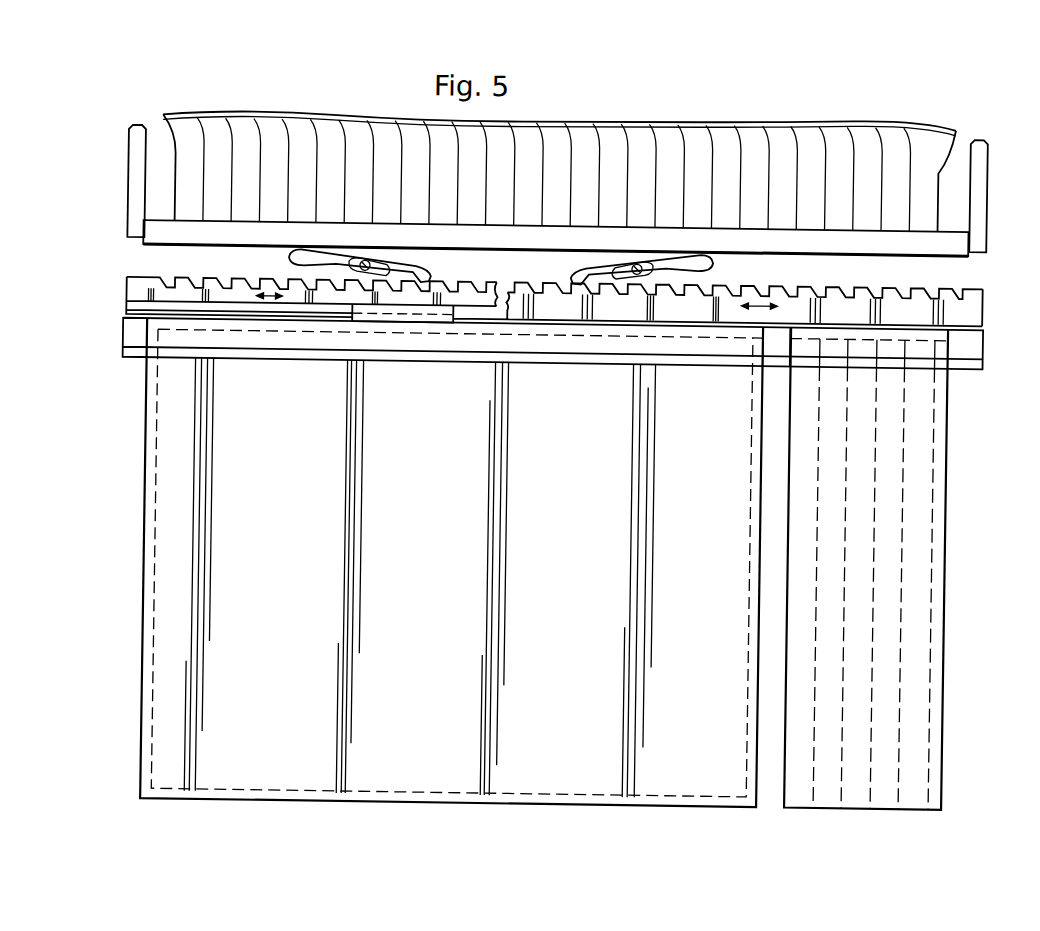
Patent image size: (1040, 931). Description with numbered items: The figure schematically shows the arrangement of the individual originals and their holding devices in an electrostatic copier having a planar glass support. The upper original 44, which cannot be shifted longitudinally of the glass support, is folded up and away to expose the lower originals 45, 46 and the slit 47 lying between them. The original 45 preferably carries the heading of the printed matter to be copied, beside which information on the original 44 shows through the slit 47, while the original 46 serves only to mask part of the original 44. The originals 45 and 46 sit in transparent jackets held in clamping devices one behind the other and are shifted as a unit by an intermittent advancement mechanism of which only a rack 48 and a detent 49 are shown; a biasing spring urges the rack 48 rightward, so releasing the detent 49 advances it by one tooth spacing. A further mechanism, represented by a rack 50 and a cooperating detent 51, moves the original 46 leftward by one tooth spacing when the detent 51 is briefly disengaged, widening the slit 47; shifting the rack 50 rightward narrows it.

The upper original 44 is at (760, 133).
The lower original 45 is at (859, 777).
The lower original 46 is at (524, 770).
The slit 47 is at (772, 768).
The rack 48 is at (967, 295).
The detent 49 is at (715, 259).
The rack 50 is at (139, 293).
The detent 51 is at (288, 258).